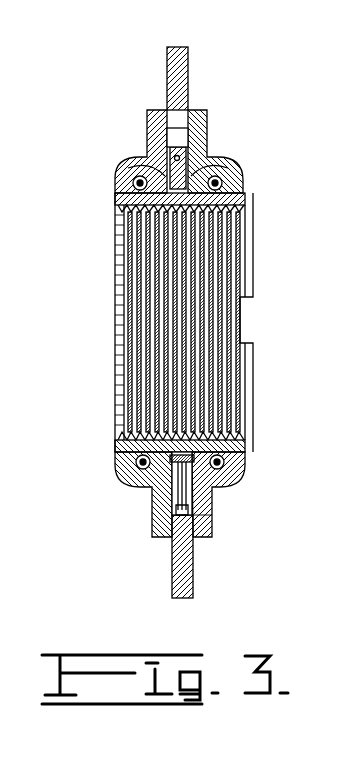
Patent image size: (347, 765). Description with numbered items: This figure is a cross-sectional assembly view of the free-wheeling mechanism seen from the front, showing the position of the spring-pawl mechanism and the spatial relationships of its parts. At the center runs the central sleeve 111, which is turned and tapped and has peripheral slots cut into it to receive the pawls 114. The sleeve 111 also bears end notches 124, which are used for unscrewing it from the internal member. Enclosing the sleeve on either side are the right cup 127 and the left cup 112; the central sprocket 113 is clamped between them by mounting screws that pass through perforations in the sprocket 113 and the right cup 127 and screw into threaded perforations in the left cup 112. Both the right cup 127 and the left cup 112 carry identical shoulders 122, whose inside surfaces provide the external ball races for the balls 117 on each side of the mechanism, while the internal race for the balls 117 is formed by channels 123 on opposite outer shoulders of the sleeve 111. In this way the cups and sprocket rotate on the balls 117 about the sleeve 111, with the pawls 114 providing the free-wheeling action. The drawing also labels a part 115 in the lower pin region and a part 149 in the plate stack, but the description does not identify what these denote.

The central sleeve 111 is at (245, 186).
The left cup 112 is at (157, 519).
The sprocket 113 is at (170, 76).
The pawls 114 is at (172, 163).
The lower pin 115 is at (186, 478).
The balls 117 is at (133, 184).
The shoulders 122 is at (134, 165).
The channels 123 is at (136, 457).
The end notches 124 is at (250, 320).
The right cup 127 is at (214, 526).
The plate stack 149 is at (205, 285).